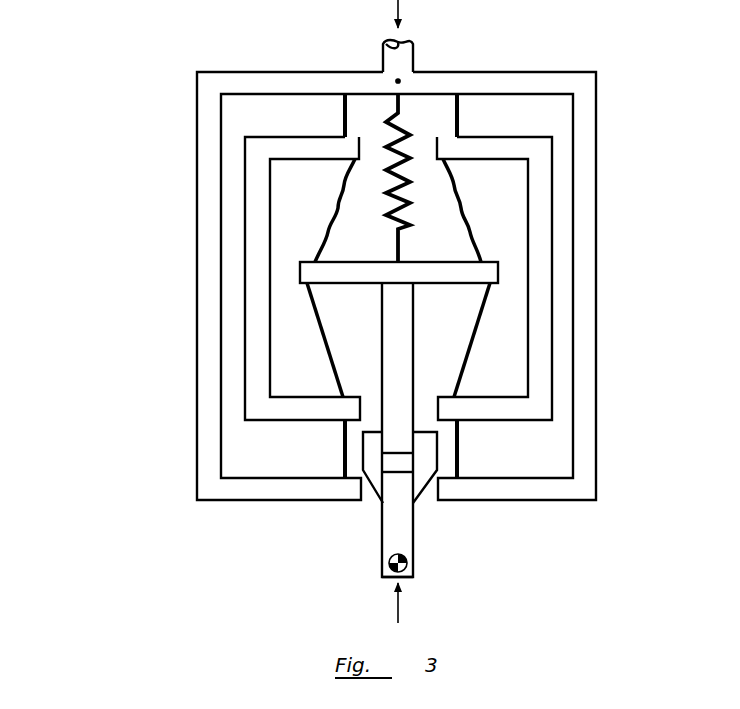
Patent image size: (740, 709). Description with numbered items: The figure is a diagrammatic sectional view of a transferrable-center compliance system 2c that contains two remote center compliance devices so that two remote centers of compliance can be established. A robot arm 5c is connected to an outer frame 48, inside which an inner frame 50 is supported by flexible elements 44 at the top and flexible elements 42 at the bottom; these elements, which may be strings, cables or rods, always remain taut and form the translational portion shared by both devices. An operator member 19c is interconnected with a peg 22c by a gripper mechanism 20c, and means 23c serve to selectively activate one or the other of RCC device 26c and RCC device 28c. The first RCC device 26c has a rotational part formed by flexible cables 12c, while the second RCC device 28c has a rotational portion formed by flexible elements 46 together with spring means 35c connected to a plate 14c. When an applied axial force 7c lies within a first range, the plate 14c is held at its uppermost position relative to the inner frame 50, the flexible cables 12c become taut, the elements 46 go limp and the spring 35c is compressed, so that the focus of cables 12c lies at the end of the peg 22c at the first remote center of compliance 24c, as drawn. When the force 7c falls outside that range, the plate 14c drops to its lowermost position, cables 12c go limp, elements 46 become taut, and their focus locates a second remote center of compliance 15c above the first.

The transferrable-center compliance system 2c is at (247, 26).
The robot arm 5c is at (413, 55).
The axial force 7c is at (400, 3).
The second remote center of compliance 15c is at (396, 79).
The frame 48 is at (558, 72).
The flexible elements 44 is at (342, 118).
The inner frame 50 is at (528, 197).
The means for selectively activating 23c is at (282, 191).
The RCC device 28c is at (292, 216).
The RCC device 26c is at (292, 341).
The flexible elements 46 is at (340, 200).
The spring means 35c is at (405, 203).
The plate 14c is at (467, 262).
The flexible cables 12c is at (333, 368).
The operator member 19c is at (413, 330).
The flexible elements 42 is at (342, 452).
The gripper mechanism 20c is at (374, 494).
The peg 22c is at (413, 530).
The first remote center of compliance 24c is at (391, 558).